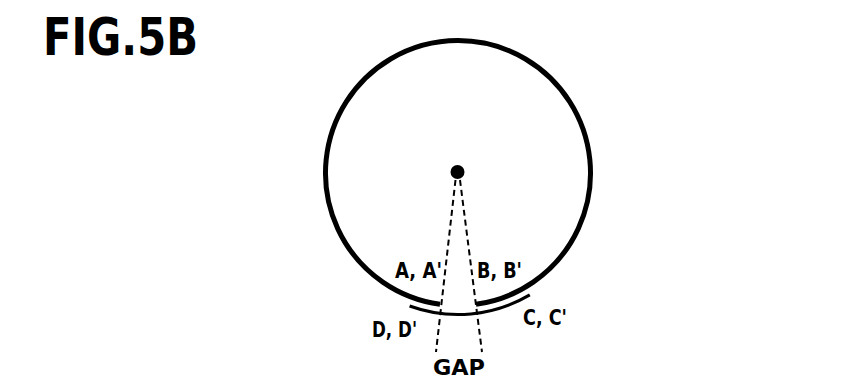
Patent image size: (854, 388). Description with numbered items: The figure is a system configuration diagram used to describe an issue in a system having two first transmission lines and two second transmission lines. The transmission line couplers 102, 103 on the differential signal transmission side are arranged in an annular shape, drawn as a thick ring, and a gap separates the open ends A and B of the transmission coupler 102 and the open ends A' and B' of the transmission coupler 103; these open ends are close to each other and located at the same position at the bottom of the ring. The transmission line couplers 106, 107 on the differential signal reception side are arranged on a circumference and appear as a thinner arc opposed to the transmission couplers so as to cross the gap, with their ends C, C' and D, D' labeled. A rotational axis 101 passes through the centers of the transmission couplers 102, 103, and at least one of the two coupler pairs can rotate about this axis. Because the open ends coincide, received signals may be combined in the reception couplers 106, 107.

The rotational axis 101 is at (457, 164).
The transmission line coupler 102 is at (425, 159).
The transmission line coupler 103 is at (333, 94).
The transmission line coupler 106 is at (558, 286).
The transmission line coupler 107 is at (549, 298).